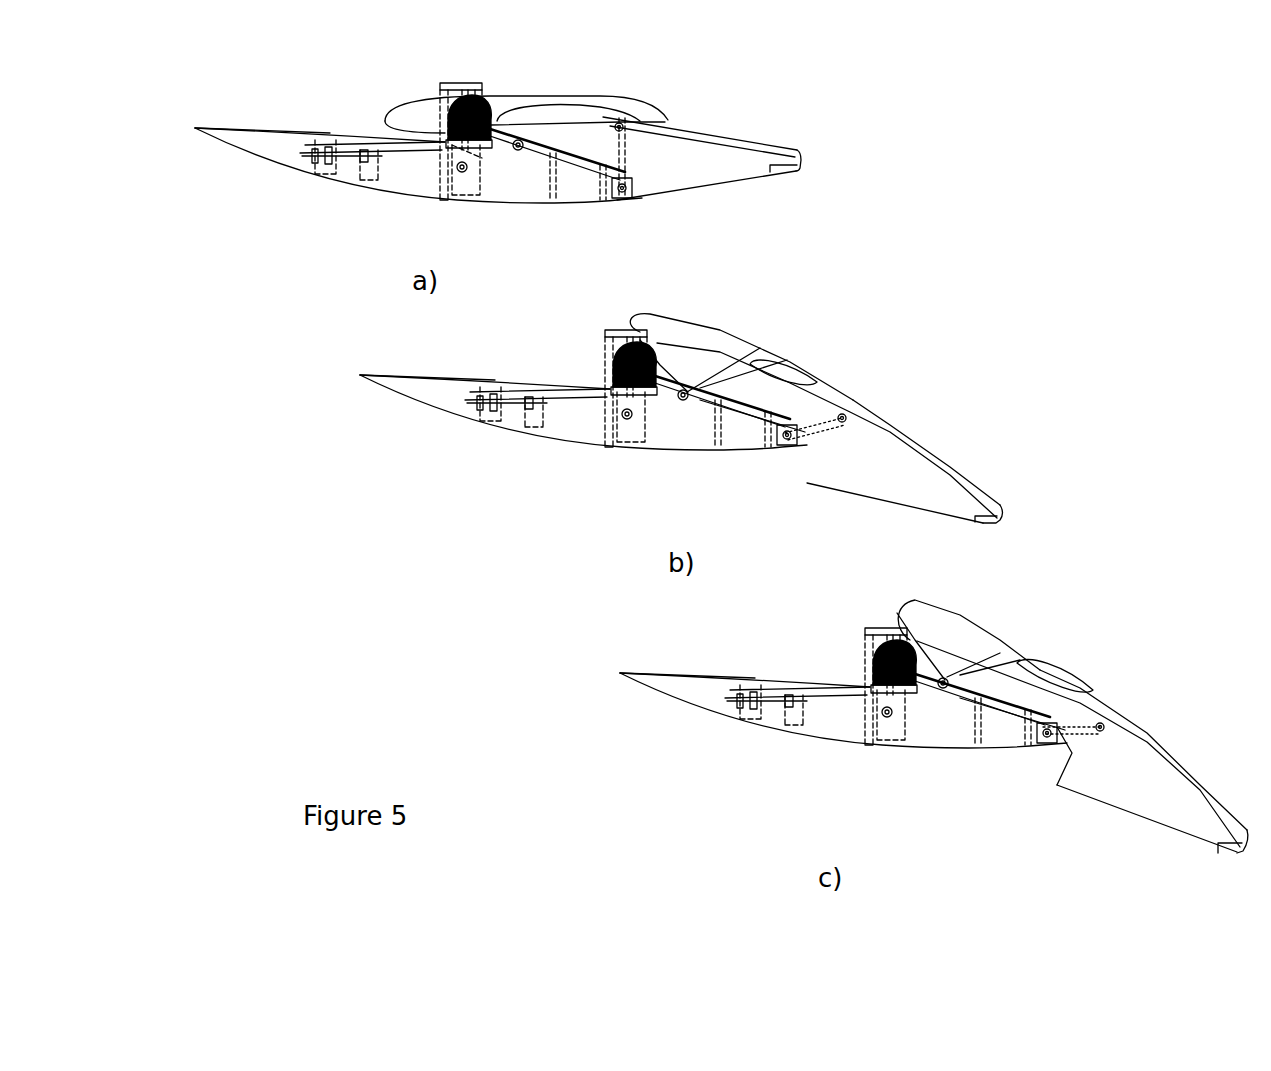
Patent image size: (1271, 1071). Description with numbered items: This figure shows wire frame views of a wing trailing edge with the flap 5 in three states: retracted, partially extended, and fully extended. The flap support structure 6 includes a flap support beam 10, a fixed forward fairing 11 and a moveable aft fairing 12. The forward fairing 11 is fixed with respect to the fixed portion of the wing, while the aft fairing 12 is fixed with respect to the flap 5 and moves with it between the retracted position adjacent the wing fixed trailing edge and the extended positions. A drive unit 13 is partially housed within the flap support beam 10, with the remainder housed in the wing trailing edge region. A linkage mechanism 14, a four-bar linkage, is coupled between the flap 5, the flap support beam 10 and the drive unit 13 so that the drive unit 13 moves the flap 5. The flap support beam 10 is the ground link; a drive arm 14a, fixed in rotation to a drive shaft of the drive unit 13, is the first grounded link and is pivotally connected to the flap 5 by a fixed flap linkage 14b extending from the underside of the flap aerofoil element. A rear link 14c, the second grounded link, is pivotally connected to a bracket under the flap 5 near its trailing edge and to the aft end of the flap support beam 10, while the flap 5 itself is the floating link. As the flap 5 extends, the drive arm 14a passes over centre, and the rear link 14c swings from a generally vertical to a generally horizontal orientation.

The flap 5 is at (542, 108).
The flap support structure 6 is at (300, 208).
The flap support beam 10 is at (518, 170).
The forward fairing 11 is at (263, 143).
The aft fairing 12 is at (710, 170).
The drive unit 13 is at (436, 148).
The linkage mechanism 14 is at (601, 138).
The drive arm 14a is at (474, 158).
The fixed flap linkage 14b is at (531, 133).
The rear link 14c is at (620, 152).